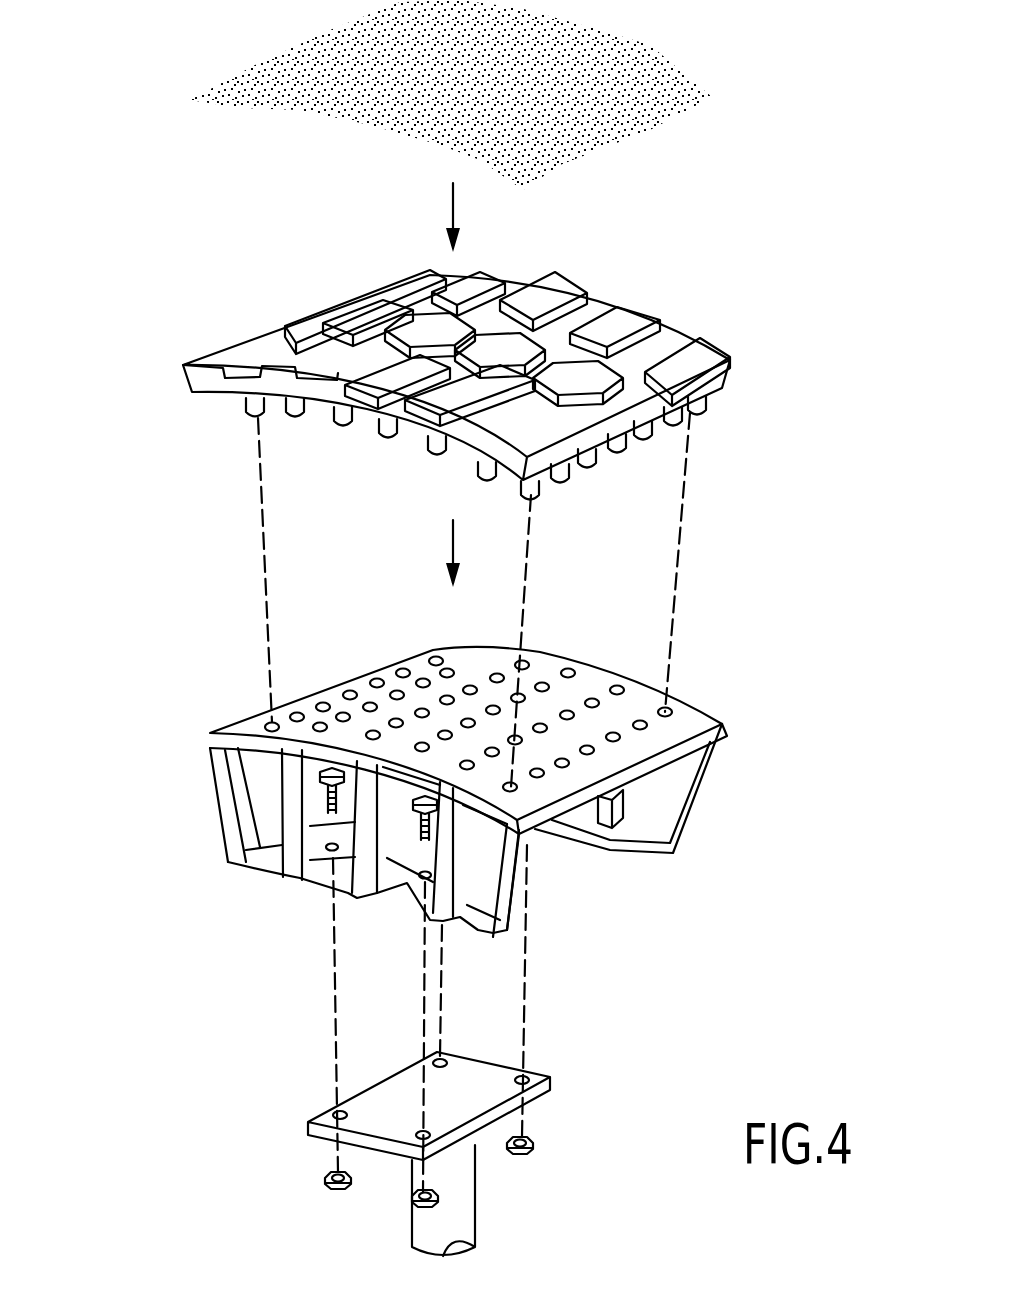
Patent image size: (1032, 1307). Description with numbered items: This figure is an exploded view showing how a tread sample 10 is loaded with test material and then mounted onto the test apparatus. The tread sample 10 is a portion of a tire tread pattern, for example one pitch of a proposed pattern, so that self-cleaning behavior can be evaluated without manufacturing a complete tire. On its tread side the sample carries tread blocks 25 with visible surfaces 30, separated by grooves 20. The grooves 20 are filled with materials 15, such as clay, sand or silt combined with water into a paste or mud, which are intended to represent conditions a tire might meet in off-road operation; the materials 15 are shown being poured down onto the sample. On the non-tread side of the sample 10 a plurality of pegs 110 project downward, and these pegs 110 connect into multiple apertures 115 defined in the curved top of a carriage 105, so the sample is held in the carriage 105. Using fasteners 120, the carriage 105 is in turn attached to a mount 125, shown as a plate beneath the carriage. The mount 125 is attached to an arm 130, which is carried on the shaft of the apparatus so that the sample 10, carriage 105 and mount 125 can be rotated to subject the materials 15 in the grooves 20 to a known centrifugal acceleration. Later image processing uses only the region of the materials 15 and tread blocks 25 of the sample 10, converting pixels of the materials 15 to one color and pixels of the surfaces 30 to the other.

The tread sample 10 is at (720, 370).
The materials 15 is at (630, 82).
The grooves 20 is at (605, 300).
The tread blocks 25 is at (552, 292).
The surfaces 30 is at (648, 305).
The carriage 105 is at (712, 722).
The pegs 110 is at (670, 420).
The apertures 115 is at (377, 683).
The fasteners 120 is at (323, 785).
The mount 125 is at (490, 1070).
The arm 130 is at (467, 1218).